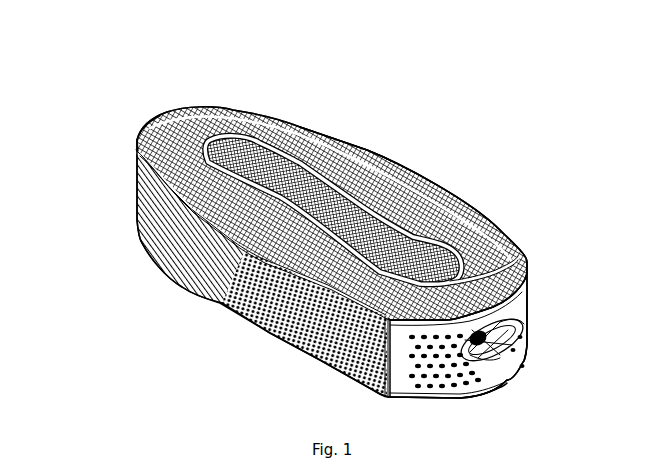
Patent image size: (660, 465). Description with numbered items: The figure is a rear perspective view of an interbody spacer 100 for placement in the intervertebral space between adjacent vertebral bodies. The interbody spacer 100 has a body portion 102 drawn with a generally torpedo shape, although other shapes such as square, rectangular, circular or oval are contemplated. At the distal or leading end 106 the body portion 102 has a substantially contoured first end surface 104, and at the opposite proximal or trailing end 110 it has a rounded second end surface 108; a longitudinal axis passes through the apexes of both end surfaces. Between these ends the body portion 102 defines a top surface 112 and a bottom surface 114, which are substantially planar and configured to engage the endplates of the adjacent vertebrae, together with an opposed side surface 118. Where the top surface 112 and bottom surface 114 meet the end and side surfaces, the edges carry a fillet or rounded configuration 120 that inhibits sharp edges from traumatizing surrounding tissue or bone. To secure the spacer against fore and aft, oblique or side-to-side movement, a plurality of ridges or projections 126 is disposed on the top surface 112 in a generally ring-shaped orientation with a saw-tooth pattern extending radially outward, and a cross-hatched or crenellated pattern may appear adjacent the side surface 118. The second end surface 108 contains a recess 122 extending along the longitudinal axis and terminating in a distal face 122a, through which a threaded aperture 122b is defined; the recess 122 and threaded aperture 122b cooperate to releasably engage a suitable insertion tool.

The interbody spacer 100 is at (369, 112).
The body portion 102 is at (407, 404).
The first end surface 104 is at (141, 114).
The distal or leading end 106 is at (157, 94).
The second end surface 108 is at (523, 362).
The proximal or trailing end 110 is at (512, 395).
The top surface 112 is at (443, 207).
The bottom surface 114 is at (277, 340).
The side surface 118 is at (200, 292).
The fillet or rounded configuration 120 is at (527, 268).
The recess 122 is at (526, 334).
The distal face 122a is at (500, 333).
The threaded aperture 122b is at (497, 363).
The plurality of ridges or projections 126 is at (200, 113).